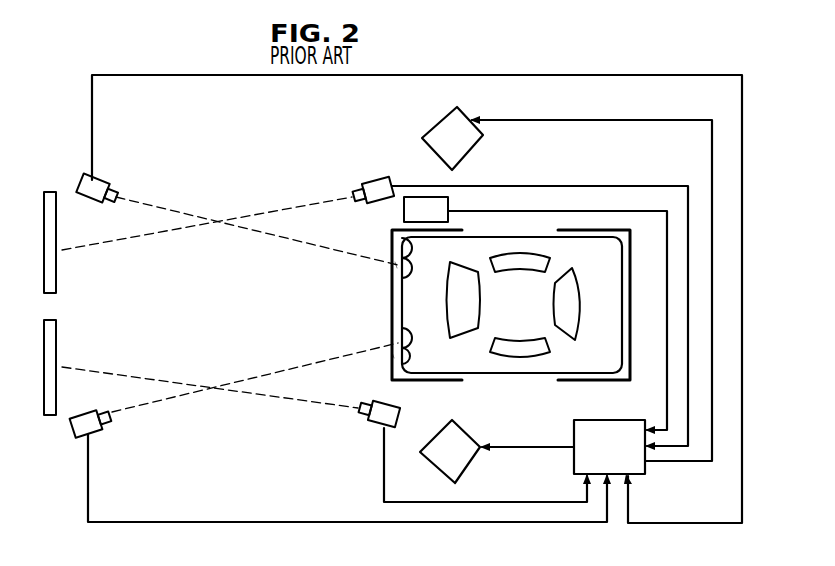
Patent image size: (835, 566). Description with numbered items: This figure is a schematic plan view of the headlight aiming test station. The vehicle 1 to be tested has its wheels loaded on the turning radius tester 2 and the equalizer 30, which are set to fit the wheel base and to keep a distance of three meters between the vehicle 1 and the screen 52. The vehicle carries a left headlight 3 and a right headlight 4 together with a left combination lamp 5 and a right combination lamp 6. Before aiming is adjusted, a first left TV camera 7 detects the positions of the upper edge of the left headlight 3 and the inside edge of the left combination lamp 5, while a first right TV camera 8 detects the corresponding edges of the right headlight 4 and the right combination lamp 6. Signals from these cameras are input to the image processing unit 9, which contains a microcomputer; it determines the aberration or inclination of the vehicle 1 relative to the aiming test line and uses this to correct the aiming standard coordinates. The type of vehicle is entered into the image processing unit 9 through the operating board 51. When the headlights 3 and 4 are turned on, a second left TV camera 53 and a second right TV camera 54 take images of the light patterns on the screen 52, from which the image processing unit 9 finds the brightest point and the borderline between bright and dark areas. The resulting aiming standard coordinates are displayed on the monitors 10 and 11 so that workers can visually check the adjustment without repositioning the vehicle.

The vehicle 1 is at (455, 376).
The turning radius tester 2 is at (386, 269).
The left headlight 3 is at (398, 335).
The right headlight 4 is at (398, 272).
The left combination lamp 5 is at (402, 368).
The right combination lamp 6 is at (398, 240).
The first left TV camera 7 is at (108, 392).
The first right TV camera 8 is at (100, 180).
The image processing unit 9 is at (618, 420).
The monitor 10 is at (480, 450).
The monitor 11 is at (484, 136).
The equalizer 30 is at (632, 300).
The operating board 51 is at (452, 197).
The screen 52 is at (75, 317).
The second left TV camera 53 is at (375, 430).
The second right TV camera 54 is at (384, 178).